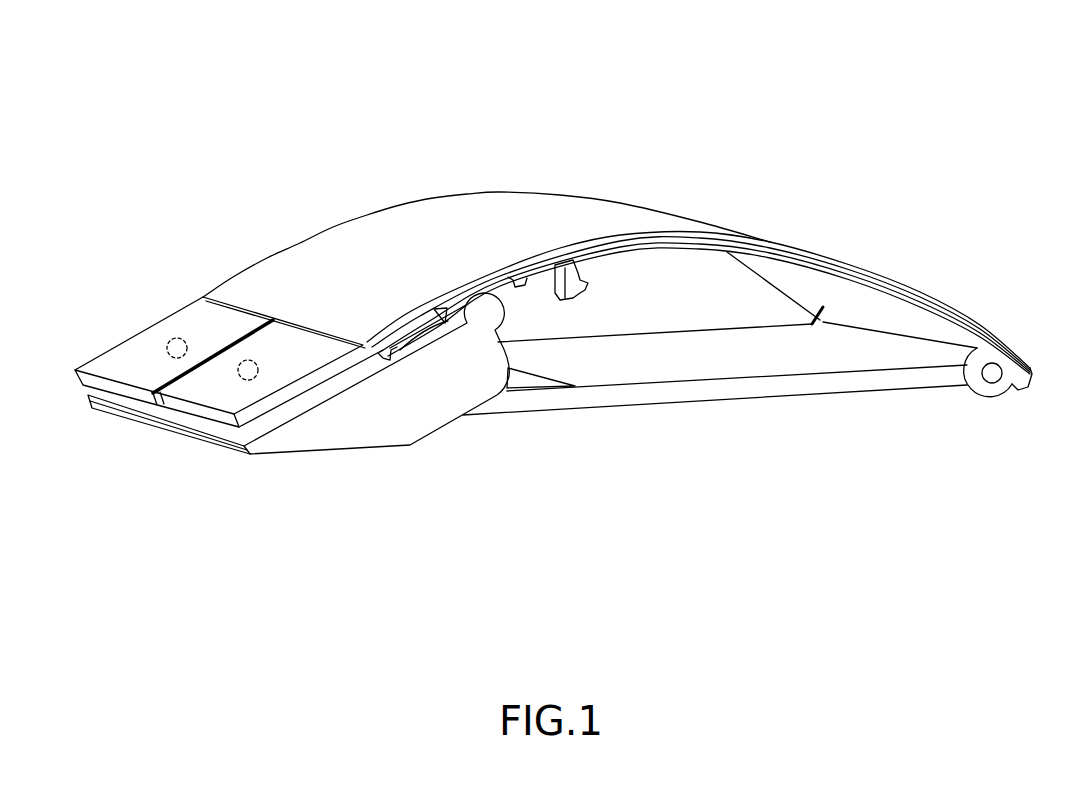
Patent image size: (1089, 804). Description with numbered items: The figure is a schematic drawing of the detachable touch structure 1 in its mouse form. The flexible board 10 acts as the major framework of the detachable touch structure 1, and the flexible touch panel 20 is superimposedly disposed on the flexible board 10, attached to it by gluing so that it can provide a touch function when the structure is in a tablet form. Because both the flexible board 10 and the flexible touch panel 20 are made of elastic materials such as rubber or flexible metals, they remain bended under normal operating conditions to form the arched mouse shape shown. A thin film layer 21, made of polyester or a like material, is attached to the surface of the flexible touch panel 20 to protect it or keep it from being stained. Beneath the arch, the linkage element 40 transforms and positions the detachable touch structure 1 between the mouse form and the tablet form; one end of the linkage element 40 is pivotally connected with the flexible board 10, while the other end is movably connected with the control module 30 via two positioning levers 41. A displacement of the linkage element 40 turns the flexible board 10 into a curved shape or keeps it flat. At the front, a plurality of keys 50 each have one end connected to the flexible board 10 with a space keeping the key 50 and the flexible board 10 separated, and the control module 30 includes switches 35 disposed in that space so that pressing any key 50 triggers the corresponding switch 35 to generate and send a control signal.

The detachable touch structure 1 is at (134, 128).
The flexible board 10 is at (992, 392).
The flexible touch panel 20 is at (1028, 372).
The thin film layer 21 is at (553, 212).
The control module 30 is at (347, 428).
The switch 35 is at (170, 350).
The linkage element 40 is at (715, 404).
The positioning lever 41 is at (508, 402).
The key 50 is at (226, 334).